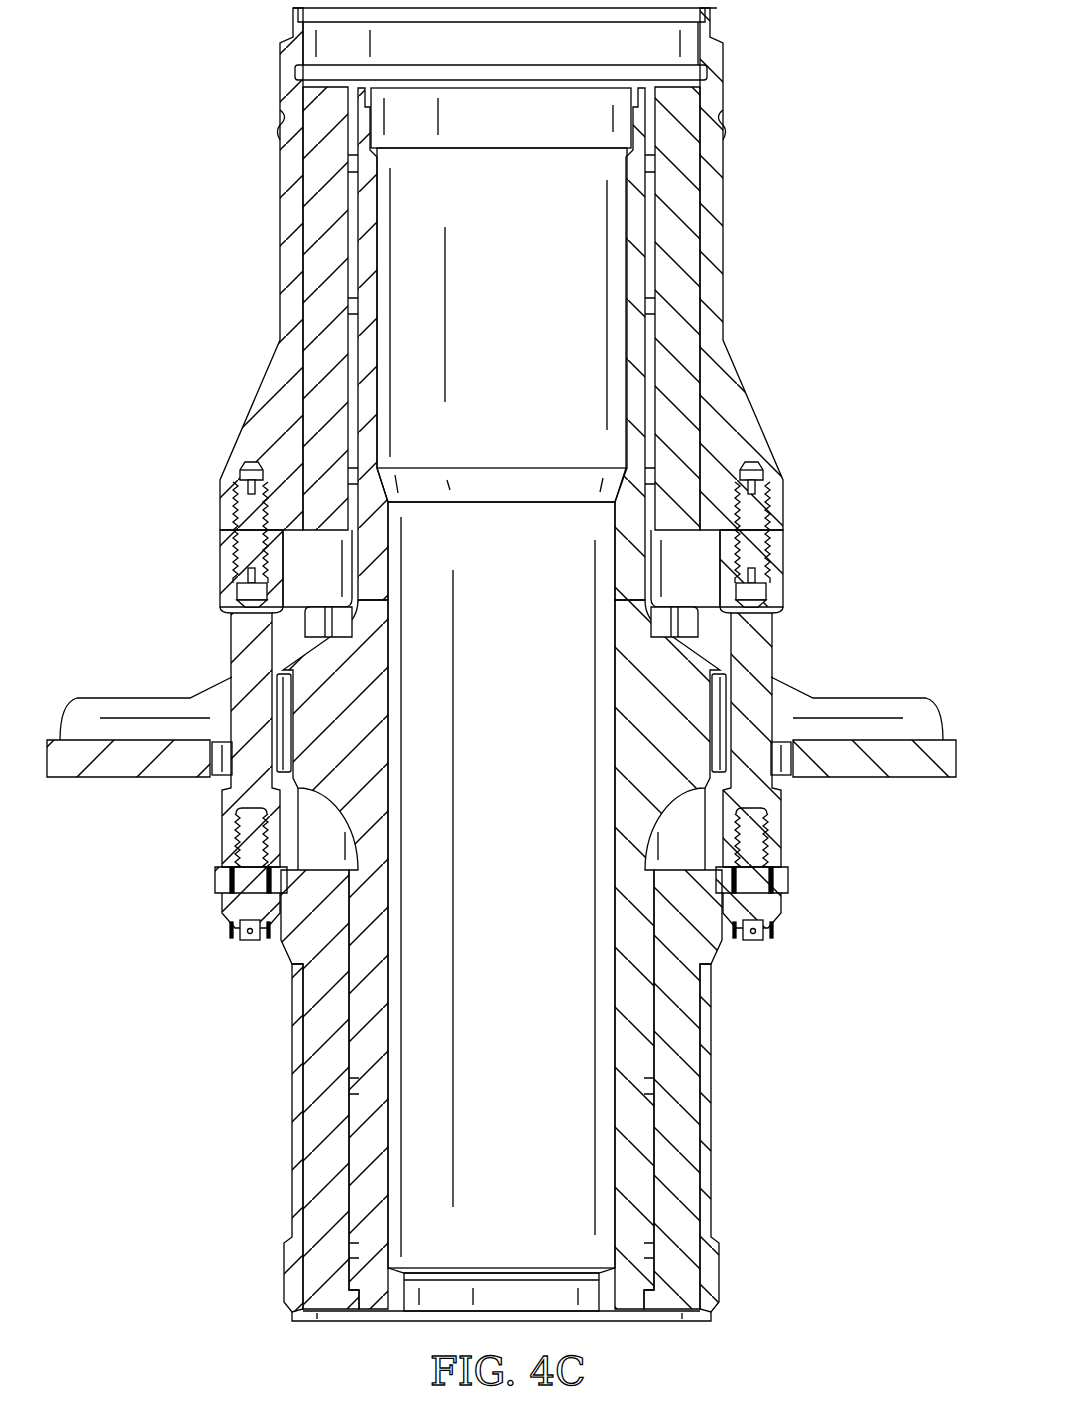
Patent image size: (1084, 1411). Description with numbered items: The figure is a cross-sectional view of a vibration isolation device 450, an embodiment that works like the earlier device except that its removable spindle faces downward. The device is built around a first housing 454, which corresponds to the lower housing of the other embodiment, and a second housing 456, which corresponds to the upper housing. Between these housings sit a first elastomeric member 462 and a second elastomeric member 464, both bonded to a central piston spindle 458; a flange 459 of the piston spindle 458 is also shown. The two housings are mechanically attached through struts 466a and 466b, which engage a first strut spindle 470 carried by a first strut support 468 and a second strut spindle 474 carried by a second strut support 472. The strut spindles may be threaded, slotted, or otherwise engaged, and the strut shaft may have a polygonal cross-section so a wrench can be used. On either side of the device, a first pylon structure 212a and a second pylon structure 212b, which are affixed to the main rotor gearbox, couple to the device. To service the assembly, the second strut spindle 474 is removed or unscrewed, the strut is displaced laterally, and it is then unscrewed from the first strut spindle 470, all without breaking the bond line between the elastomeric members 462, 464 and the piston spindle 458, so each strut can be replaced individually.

The vibration isolation device 450 is at (788, 84).
The first housing 454 is at (725, 173).
The second housing 456 is at (713, 1173).
The piston spindle 458 is at (647, 282).
The flange 459 is at (883, 698).
The first elastomeric member 462 is at (702, 313).
The second elastomeric member 464 is at (703, 1057).
The strut 466a is at (775, 642).
The strut 466b is at (232, 660).
The first strut support 468 is at (783, 493).
The first strut spindle 470 is at (772, 508).
The second strut support 472 is at (787, 885).
The second strut spindle 474 is at (768, 843).
The first pylon structure 212a is at (887, 778).
The second pylon structure 212b is at (110, 780).